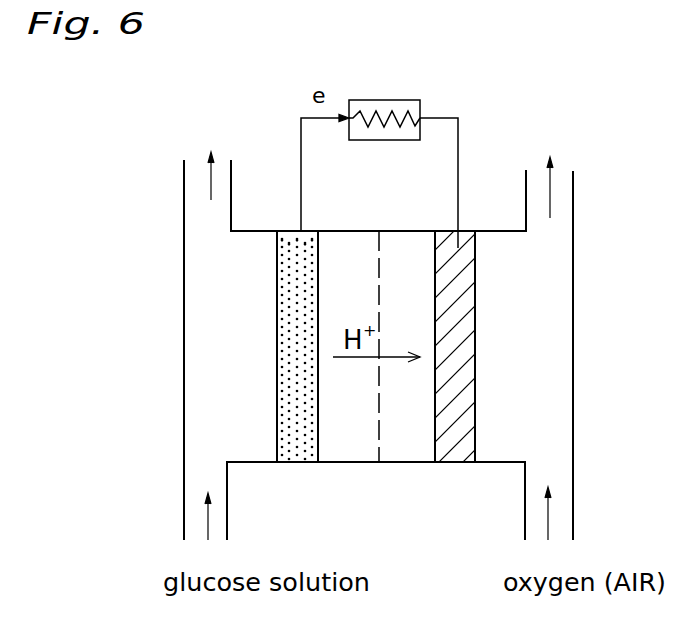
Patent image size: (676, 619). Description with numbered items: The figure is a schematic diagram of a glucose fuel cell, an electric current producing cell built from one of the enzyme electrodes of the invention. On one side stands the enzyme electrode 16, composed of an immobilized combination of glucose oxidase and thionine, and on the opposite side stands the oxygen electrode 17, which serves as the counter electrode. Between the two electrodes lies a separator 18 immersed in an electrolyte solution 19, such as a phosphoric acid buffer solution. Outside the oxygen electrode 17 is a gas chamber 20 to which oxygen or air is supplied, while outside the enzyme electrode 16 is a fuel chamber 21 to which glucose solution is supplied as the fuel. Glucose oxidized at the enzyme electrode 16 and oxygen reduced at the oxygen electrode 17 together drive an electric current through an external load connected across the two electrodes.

The enzyme electrode 16 is at (298, 265).
The oxygen electrode 17 is at (452, 248).
The separator 18 is at (378, 446).
The electrolyte solution 19 is at (343, 445).
The gas chamber 20 is at (548, 400).
The fuel chamber 21 is at (206, 369).